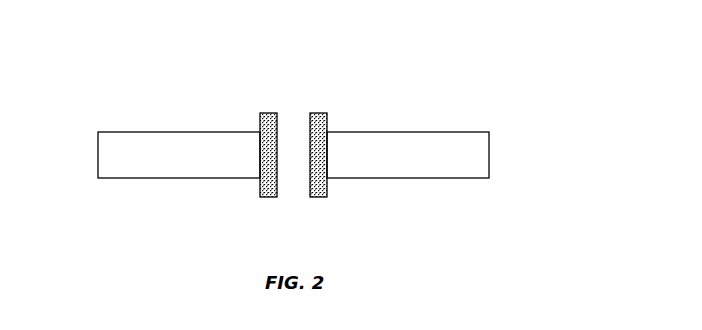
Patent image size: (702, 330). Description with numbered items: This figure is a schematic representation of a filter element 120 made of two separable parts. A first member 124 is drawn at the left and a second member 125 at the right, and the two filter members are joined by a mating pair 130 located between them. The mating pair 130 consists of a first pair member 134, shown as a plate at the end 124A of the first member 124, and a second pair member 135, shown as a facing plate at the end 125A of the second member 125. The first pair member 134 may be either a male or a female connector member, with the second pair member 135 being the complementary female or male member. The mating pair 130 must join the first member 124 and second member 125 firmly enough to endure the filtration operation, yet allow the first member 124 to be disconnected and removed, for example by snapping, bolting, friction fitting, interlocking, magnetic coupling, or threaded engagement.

The filter element 120 is at (446, 68).
The first member 124 is at (132, 162).
The second member 125 is at (466, 160).
The end of filter member 124 124A is at (257, 125).
The second pair member 135 is at (317, 112).
The mating pair 130 is at (248, 194).
The first pair member 134 is at (264, 198).
The end of filter member 125 125A is at (334, 181).